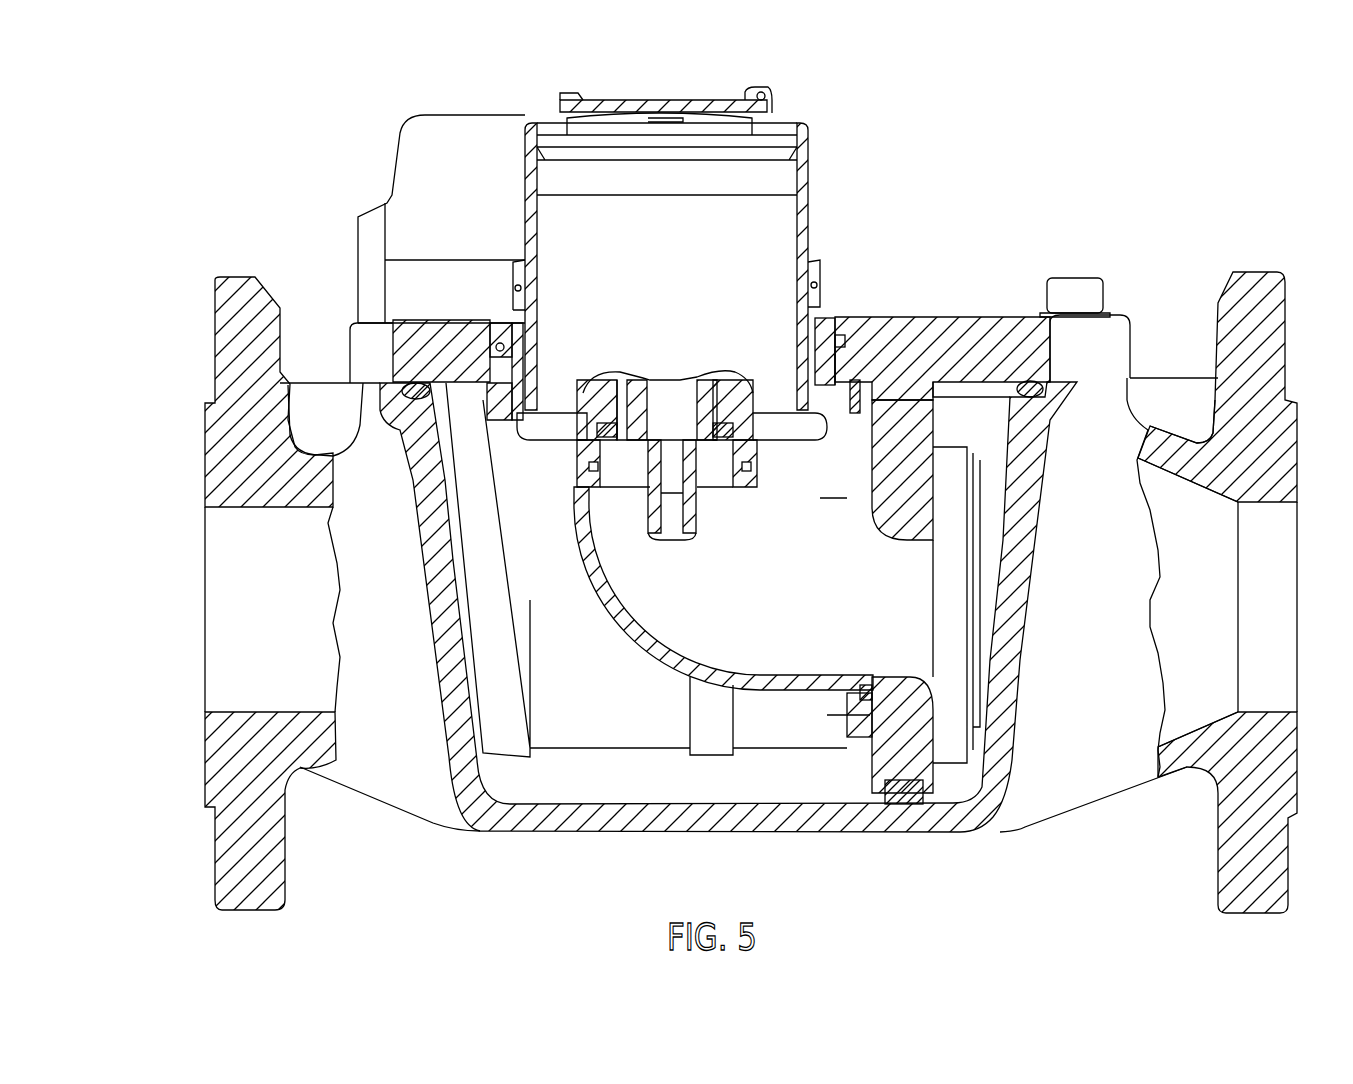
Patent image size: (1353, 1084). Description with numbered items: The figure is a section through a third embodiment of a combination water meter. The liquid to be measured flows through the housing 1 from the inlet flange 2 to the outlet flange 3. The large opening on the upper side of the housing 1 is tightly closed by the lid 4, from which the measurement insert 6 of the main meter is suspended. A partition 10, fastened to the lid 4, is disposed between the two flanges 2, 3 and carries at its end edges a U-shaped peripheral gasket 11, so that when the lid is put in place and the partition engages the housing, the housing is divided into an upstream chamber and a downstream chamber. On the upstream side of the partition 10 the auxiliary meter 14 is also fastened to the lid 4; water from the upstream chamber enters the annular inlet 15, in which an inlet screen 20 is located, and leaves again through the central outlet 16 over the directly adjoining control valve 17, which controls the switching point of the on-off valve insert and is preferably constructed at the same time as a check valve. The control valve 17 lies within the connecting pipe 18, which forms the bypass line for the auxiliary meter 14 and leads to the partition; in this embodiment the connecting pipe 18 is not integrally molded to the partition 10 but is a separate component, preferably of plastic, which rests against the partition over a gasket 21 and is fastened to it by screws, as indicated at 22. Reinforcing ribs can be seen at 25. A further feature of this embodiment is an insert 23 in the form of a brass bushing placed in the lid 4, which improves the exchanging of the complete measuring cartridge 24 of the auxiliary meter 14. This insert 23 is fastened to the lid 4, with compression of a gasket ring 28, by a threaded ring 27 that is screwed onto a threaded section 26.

The housing 1 is at (548, 836).
The inlet flange 2 is at (217, 773).
The outlet flange 3 is at (1270, 833).
The lid 4 is at (997, 322).
The measurement insert 6 is at (533, 677).
The partition 10 is at (913, 442).
The gasket 11 is at (913, 798).
The auxiliary meter 14 is at (811, 145).
The annular inlet 15 is at (573, 407).
The central outlet 16 is at (692, 395).
The control valve 17 is at (700, 470).
The connecting pipe 18 is at (770, 697).
The inlet screen 20 is at (577, 405).
The gasket 21 is at (867, 690).
The screw fastening 22 is at (830, 497).
The insert 23 is at (825, 325).
The measuring cartridge 24 is at (768, 243).
The reinforcing ribs 25 is at (542, 435).
The threaded section 26 is at (840, 350).
The threaded ring 27 is at (860, 400).
The gasket ring 28 is at (848, 340).